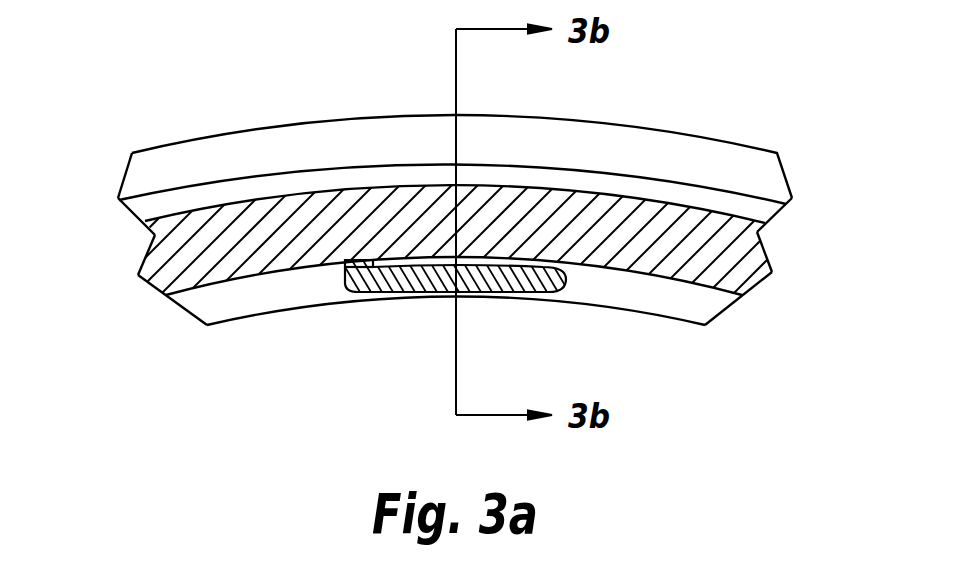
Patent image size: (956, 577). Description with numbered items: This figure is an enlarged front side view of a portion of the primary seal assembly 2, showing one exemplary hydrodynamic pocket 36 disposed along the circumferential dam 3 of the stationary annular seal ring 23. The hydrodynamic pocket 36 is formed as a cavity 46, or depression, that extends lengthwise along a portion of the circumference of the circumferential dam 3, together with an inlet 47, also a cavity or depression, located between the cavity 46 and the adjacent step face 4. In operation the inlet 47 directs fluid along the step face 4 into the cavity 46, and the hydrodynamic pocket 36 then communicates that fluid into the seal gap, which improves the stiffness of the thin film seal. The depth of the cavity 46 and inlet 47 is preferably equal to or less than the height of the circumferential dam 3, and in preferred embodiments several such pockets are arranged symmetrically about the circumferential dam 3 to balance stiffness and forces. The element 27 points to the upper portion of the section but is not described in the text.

The primary seal assembly 2 is at (123, 178).
The circumferential dam 3 is at (727, 310).
The step face 4 is at (612, 243).
The stationary annular seal ring 23 is at (150, 285).
The upper ring member 27 is at (735, 162).
The hydrodynamic pocket 36 is at (392, 286).
The cavity 46 is at (553, 287).
The inlet 47 is at (360, 276).